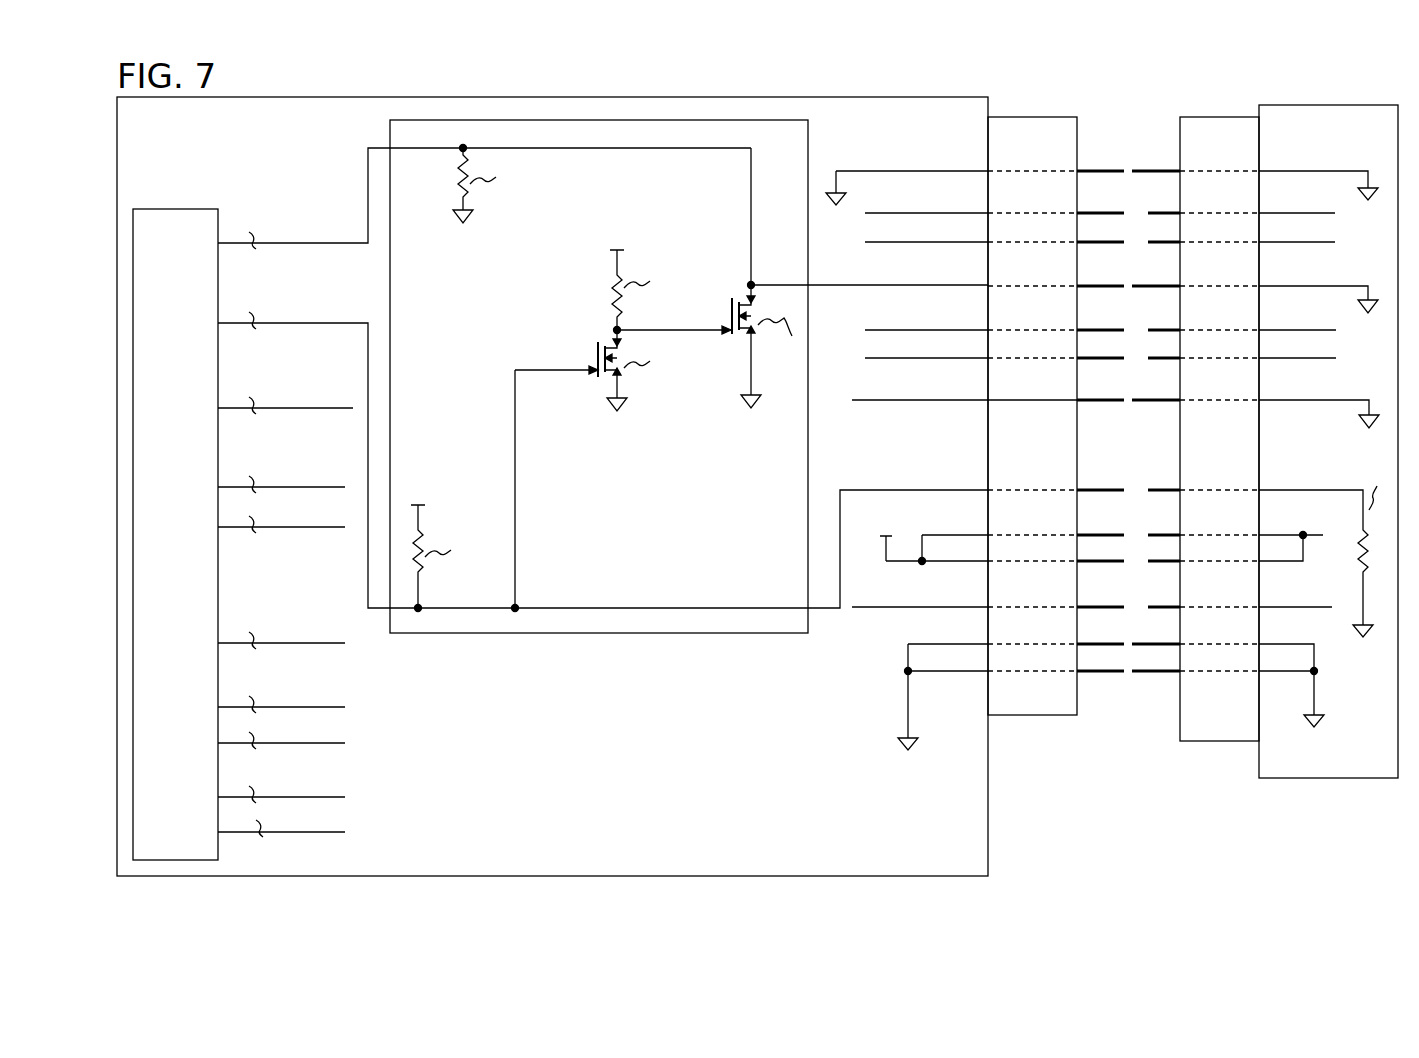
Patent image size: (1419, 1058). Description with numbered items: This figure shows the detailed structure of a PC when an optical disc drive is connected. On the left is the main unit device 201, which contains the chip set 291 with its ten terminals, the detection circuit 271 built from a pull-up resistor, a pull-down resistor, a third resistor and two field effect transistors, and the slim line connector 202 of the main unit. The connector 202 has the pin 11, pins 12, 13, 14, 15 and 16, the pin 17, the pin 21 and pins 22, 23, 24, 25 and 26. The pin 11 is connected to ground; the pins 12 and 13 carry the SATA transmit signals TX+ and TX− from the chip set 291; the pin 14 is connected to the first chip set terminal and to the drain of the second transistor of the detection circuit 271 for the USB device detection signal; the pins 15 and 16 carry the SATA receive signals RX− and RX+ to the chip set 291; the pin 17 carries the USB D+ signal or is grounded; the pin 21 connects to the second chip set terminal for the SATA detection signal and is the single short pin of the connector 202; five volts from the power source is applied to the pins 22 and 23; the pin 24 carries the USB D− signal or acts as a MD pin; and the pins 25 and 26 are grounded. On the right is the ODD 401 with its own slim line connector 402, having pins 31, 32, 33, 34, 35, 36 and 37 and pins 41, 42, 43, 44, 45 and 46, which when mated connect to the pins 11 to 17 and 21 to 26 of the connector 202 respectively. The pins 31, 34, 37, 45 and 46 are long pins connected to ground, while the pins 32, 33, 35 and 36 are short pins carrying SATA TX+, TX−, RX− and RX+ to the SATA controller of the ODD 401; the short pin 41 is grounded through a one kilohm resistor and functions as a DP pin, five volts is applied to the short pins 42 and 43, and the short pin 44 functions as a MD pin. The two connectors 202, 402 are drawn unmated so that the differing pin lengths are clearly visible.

The main unit device 201 is at (286, 97).
The chip set 291 is at (163, 209).
The detection circuit 271 is at (812, 143).
The slim line connector 202 is at (1030, 117).
The slim line connector 402 is at (1225, 117).
The ODD 401 is at (1305, 105).
The pin 11 is at (1088, 171).
The pin 12 is at (1088, 213).
The pin 13 is at (1106, 243).
The pin 14 is at (1094, 286).
The pin 15 is at (1088, 330).
The pin 16 is at (1093, 359).
The pin 17 is at (1093, 401).
The pin 21 is at (1088, 490).
The pin 22 is at (1088, 535).
The pin 23 is at (1108, 562).
The pin 24 is at (1096, 607).
The pin 25 is at (1088, 644).
The pin 26 is at (1093, 672).
The pin 31 is at (1166, 171).
The pin 32 is at (1166, 213).
The pin 33 is at (1158, 243).
The pin 34 is at (1146, 286).
The pin 35 is at (1168, 330).
The pin 36 is at (1167, 359).
The pin 37 is at (1167, 401).
The pin 41 is at (1168, 490).
The pin 42 is at (1168, 535).
The pin 43 is at (1153, 562).
The pin 44 is at (1175, 607).
The pin 45 is at (1168, 644).
The pin 46 is at (1167, 672).